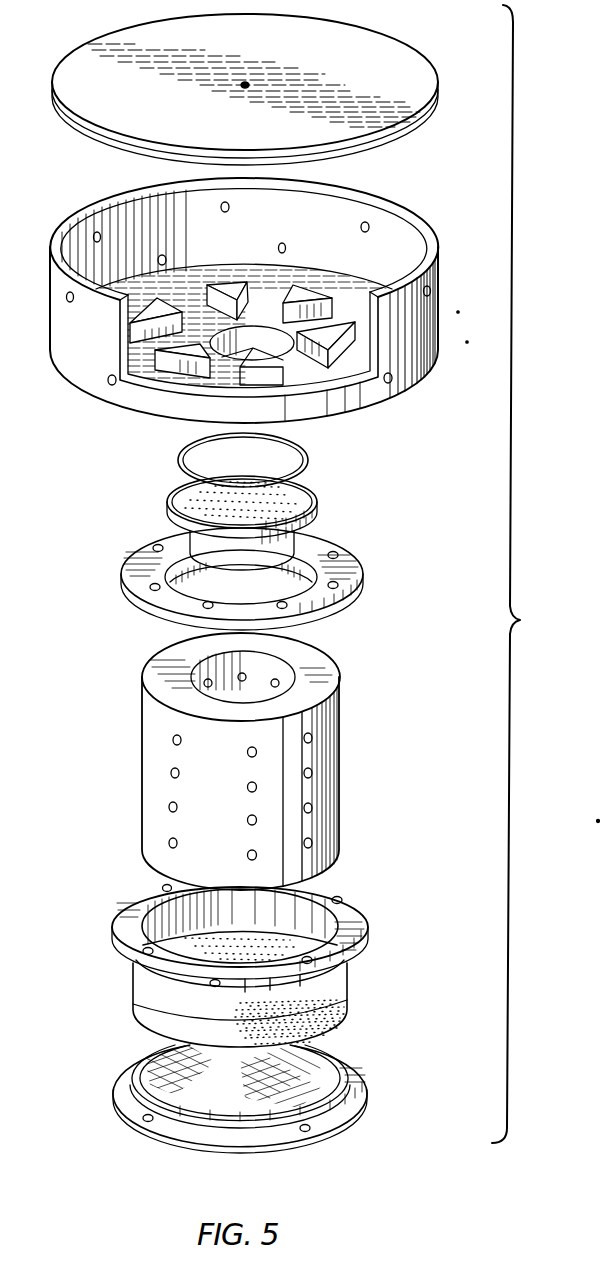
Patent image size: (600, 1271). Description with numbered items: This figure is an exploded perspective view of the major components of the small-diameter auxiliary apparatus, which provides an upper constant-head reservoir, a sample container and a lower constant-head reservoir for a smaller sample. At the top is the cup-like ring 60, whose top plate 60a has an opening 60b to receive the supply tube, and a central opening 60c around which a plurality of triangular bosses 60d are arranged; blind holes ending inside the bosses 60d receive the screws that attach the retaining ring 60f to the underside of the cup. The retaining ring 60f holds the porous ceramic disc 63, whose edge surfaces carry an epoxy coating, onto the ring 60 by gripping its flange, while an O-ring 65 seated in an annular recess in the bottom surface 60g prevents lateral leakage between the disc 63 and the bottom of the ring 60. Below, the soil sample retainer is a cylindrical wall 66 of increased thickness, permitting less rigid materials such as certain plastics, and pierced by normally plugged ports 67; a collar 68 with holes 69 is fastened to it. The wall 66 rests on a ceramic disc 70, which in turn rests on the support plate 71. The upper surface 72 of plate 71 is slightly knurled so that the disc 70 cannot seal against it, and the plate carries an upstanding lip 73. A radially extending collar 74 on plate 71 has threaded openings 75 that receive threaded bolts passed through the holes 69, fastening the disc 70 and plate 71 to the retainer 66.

The cup-like ring 60 is at (266, 304).
The top plate 60a is at (406, 52).
The opening 60b is at (250, 83).
The central opening 60c is at (206, 337).
The triangular bosses 60d is at (300, 297).
The retaining ring 60f is at (350, 553).
The bottom surface 60g is at (105, 386).
The porous ceramic disc 63 is at (168, 492).
The O-ring 65 is at (305, 458).
The cylindrical wall 66 is at (339, 716).
The ports 67 is at (248, 787).
The collar 68 is at (133, 894).
The holes 69 is at (342, 900).
The ceramic disc 70 is at (330, 978).
The support plate 71 is at (115, 1063).
The upper surface 72 is at (313, 1073).
The upstanding lip 73 is at (353, 1086).
The radially extending collar 74 is at (122, 1095).
The threaded openings 75 is at (147, 1122).